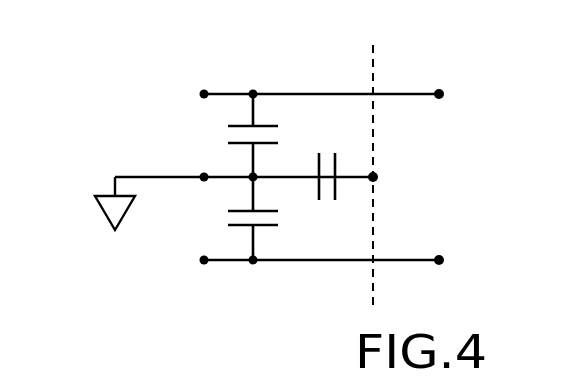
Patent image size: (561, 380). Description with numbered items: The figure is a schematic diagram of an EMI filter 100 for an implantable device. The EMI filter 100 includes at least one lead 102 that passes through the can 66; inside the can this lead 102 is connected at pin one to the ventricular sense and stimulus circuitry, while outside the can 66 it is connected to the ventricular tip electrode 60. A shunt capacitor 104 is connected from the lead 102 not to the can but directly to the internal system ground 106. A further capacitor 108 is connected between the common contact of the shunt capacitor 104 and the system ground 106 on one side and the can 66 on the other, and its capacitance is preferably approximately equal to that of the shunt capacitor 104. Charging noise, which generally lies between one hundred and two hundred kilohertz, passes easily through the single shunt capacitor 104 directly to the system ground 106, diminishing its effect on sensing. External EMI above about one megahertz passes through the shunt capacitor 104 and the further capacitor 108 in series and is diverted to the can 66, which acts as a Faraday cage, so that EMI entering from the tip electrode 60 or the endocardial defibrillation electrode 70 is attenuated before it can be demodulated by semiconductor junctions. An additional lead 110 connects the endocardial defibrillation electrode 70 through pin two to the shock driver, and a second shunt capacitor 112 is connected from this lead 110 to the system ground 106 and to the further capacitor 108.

The EMI filter 100 is at (205, 293).
The lead 102 is at (283, 93).
The shunt capacitor 104 is at (221, 141).
The internal system ground 106 is at (110, 186).
The C3 capacitor 108 is at (342, 169).
The additional lead 110 is at (268, 262).
The C2 capacitor 112 is at (262, 230).
The ventricular tip electrode 60 is at (447, 90).
The can 66 is at (374, 207).
The endocardial defibrillation electrode 70 is at (446, 265).